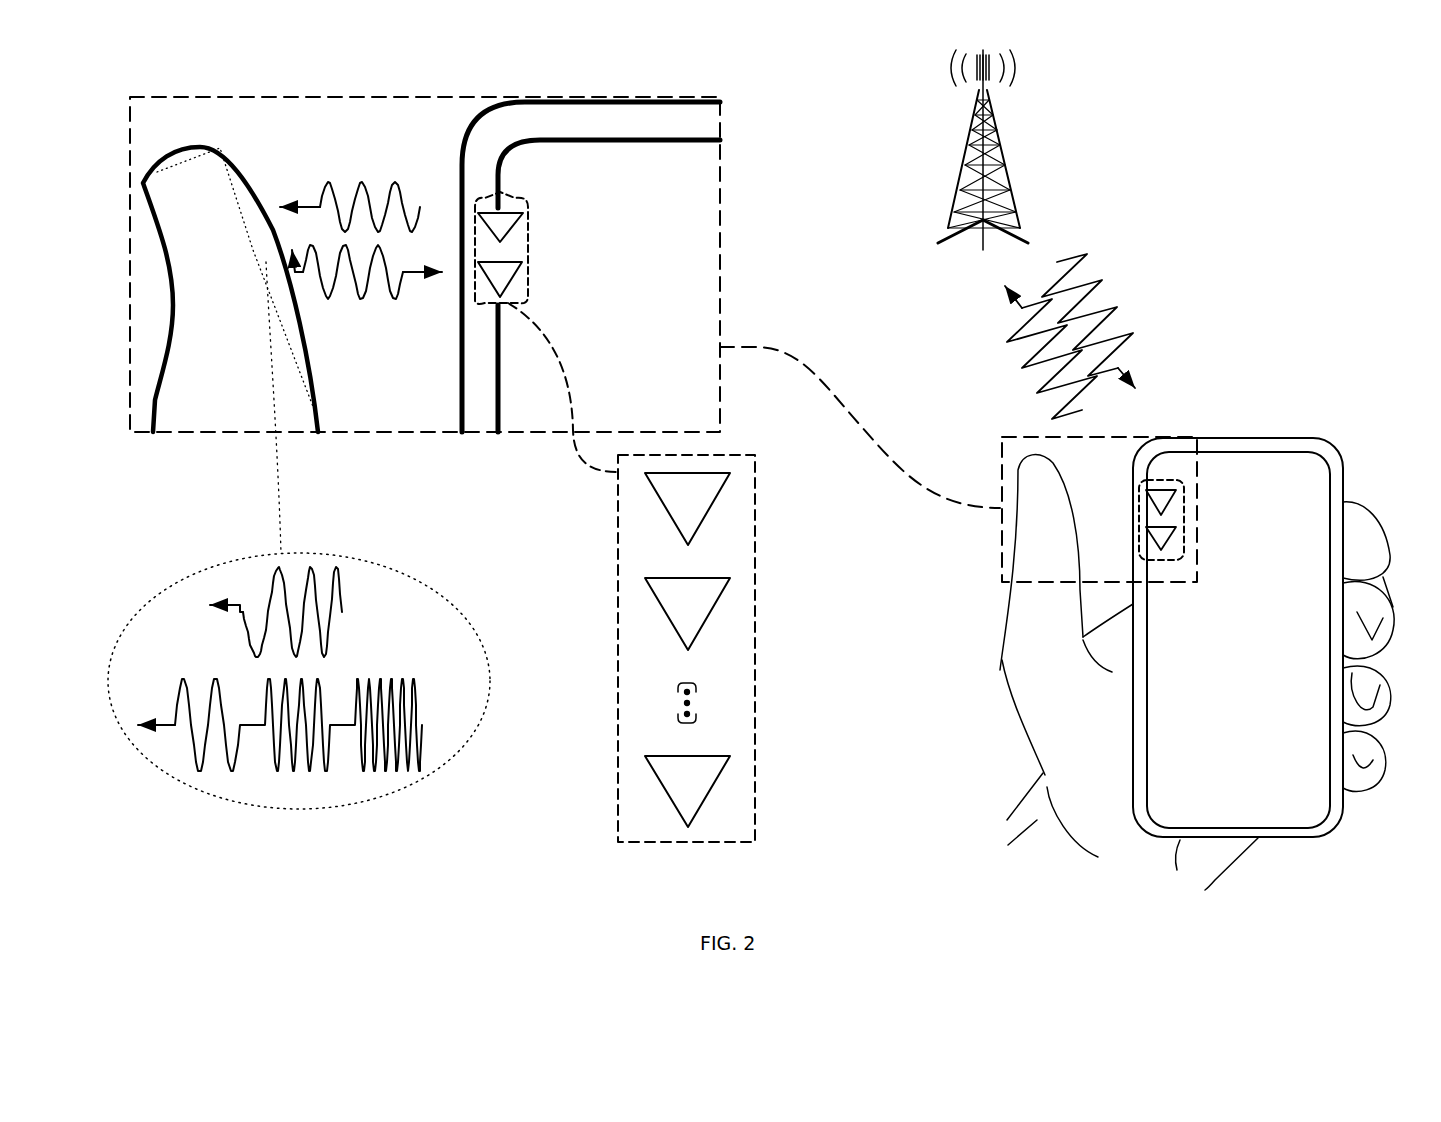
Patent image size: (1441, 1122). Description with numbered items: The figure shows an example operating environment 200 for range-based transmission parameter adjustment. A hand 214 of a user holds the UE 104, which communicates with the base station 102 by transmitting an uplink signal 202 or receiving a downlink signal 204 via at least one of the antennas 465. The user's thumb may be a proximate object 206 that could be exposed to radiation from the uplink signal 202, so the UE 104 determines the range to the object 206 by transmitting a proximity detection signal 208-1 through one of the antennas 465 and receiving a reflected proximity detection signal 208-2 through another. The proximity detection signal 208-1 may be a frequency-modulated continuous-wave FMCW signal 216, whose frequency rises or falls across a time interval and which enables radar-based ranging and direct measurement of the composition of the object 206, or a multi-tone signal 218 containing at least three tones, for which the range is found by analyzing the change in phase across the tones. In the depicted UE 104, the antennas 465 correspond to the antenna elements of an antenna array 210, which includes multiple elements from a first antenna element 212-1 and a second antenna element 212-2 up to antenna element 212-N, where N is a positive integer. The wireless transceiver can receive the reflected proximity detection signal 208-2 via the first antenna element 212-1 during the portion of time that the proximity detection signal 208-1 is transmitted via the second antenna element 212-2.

The operating environment 200 is at (1337, 74).
The base station 102 is at (462, 395).
The UE 104 is at (1340, 822).
The uplink signal 202 is at (997, 362).
The downlink signal 204 is at (1135, 286).
The object 206 is at (214, 330).
The proximity detection signal 208-1 is at (366, 156).
The reflected proximity detection signal 208-2 is at (365, 320).
The antenna array 210 is at (757, 573).
The first antenna element 212-1 is at (665, 507).
The second antenna element 212-2 is at (663, 607).
The antenna element 212-N is at (663, 788).
The hand 214 is at (970, 657).
The FMCW signal 216 is at (235, 592).
The multi-tone signal 218 is at (253, 783).
The antennas 465 is at (532, 262).